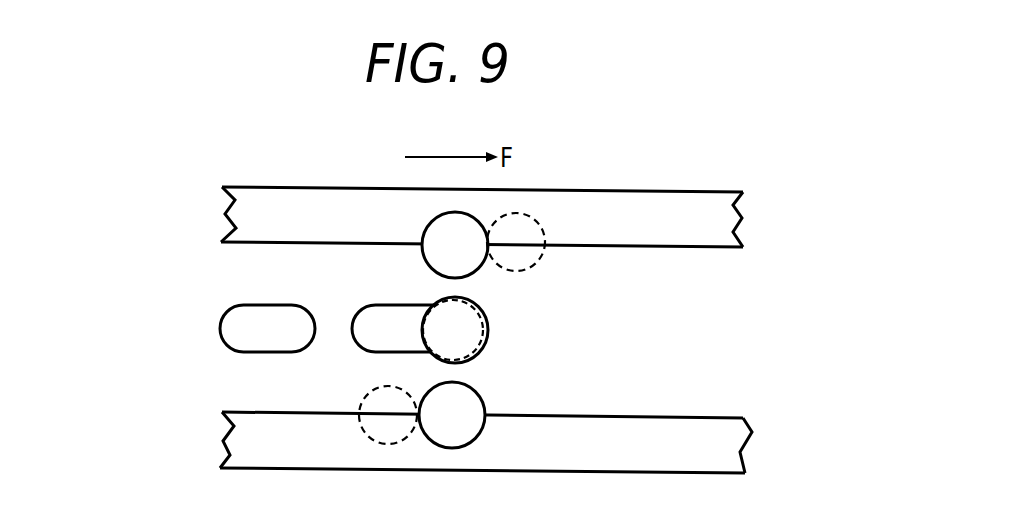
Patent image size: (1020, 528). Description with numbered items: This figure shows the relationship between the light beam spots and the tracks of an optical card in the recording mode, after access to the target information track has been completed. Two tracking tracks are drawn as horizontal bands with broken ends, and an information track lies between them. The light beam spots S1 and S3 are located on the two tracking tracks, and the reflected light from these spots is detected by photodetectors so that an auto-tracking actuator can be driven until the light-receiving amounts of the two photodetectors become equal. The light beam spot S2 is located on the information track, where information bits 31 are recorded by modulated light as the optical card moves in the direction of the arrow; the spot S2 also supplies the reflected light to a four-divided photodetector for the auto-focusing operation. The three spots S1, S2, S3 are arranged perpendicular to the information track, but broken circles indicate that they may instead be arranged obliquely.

The information bits 31 is at (295, 352).
The light beam spot S1 is at (482, 266).
The light beam spot S2 is at (488, 328).
The light beam spot S3 is at (483, 404).